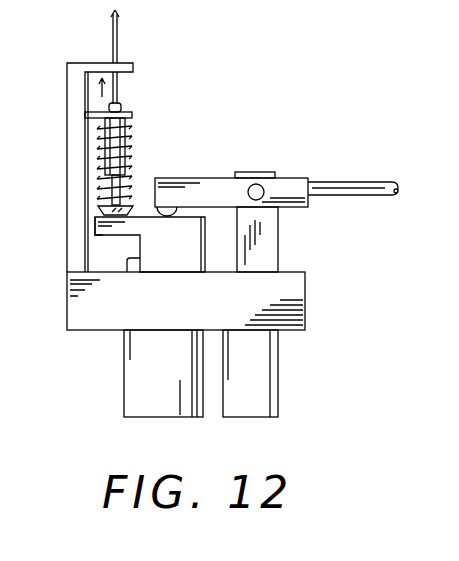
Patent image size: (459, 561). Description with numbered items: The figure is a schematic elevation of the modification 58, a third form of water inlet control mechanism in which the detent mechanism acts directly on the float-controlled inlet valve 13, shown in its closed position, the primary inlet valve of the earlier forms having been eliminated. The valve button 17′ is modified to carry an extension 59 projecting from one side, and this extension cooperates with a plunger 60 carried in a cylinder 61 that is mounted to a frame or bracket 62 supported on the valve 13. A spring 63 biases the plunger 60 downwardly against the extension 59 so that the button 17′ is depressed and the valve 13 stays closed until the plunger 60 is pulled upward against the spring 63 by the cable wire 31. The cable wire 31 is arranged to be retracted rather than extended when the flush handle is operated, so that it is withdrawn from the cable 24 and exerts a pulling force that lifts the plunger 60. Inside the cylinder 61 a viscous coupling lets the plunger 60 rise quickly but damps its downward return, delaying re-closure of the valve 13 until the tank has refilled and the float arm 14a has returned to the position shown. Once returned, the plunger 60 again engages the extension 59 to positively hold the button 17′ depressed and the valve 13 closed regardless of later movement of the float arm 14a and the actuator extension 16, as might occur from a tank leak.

The modification 58 is at (223, 106).
The frame or bracket 62 is at (68, 182).
The cable 24 is at (119, 19).
The cable wire 31 is at (118, 92).
The cylinder 61 is at (115, 133).
The spring 63 is at (115, 172).
The plunger 60 is at (100, 210).
The valve button 17′ is at (205, 237).
The extension 59 is at (103, 236).
The actuator extension 16 is at (218, 178).
The float arm 14a is at (350, 182).
The valve 13 is at (305, 310).